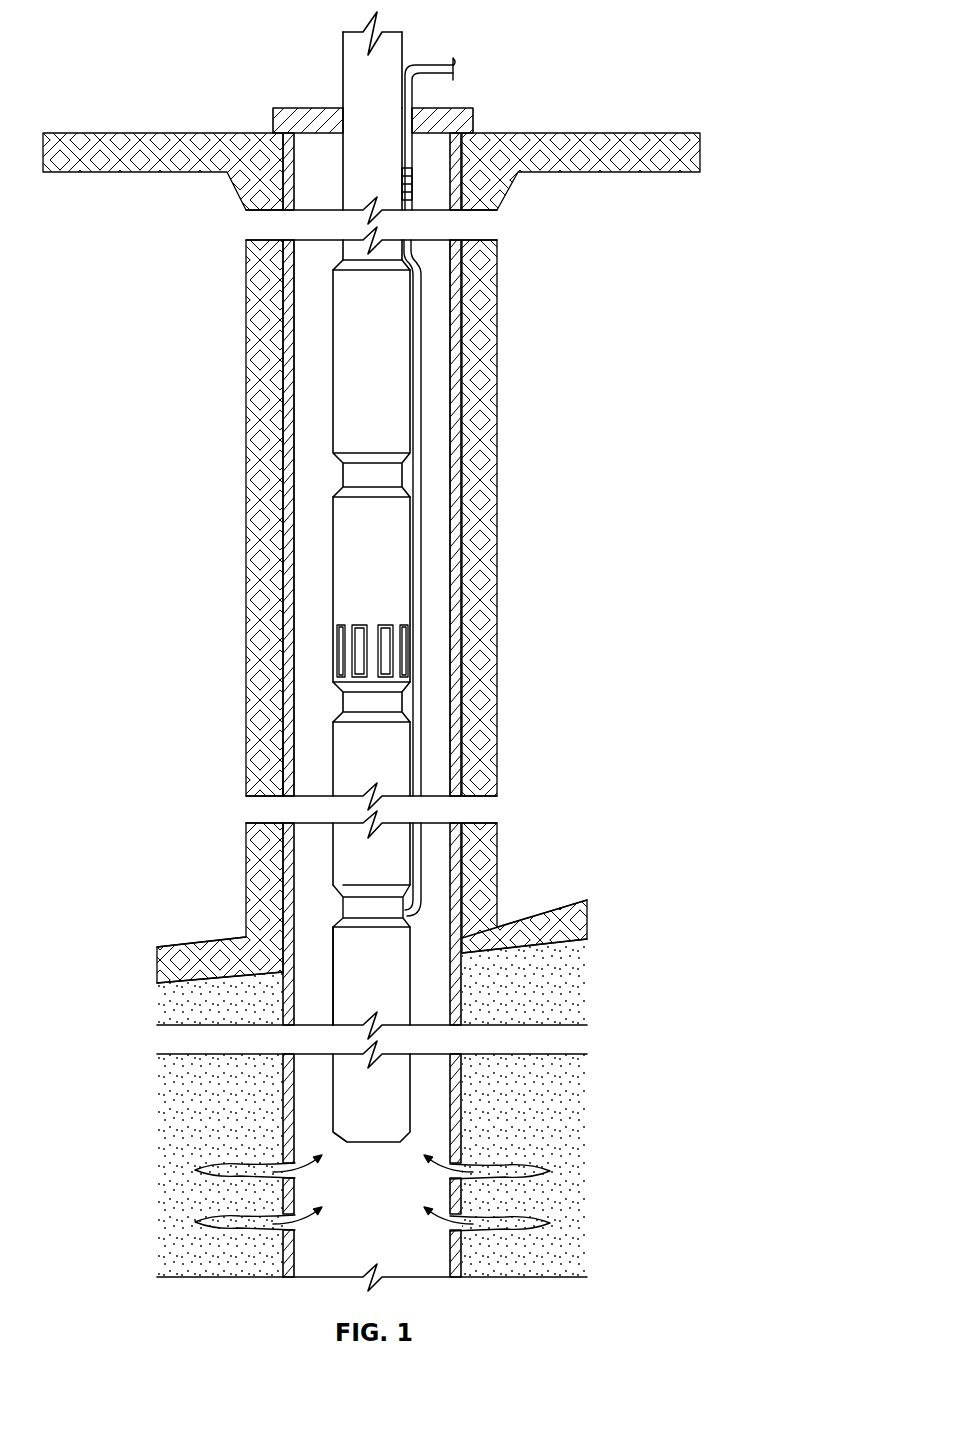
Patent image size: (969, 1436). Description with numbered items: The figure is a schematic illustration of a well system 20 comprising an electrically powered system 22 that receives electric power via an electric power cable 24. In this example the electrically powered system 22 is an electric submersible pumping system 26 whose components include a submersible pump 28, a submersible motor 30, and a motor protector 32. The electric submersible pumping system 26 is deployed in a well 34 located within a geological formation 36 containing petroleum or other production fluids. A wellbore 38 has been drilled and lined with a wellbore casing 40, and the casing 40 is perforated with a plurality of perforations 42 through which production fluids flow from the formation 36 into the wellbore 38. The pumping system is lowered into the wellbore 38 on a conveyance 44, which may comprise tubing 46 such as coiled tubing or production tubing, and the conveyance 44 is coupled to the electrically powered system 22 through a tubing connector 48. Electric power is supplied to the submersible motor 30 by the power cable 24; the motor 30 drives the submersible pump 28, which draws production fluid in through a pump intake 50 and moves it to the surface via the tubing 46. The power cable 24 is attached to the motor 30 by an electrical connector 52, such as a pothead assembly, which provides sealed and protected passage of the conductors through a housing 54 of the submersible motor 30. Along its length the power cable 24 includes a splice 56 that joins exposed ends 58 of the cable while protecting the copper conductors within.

The well system 20 is at (480, 82).
The electrically powered system 22 is at (367, 701).
The electric power cable 24 is at (421, 420).
The electric submersible pumping system 26 is at (318, 572).
The submersible pump 28 is at (377, 565).
The submersible motor 30 is at (380, 968).
The motor protector 32 is at (377, 765).
The well 34 is at (297, 763).
The geological formation 36 is at (530, 987).
The wellbore 38 is at (432, 678).
The wellbore casing 40 is at (287, 387).
The perforations 42 is at (550, 1223).
The conveyance 44 is at (332, 44).
The tubing 46 is at (357, 92).
The tubing connector 48 is at (370, 372).
The pump intake 50 is at (360, 663).
The electrical connector 52 is at (413, 917).
The housing 54 is at (332, 950).
The splice 56 is at (410, 188).
The exposed ends 58 is at (412, 158).